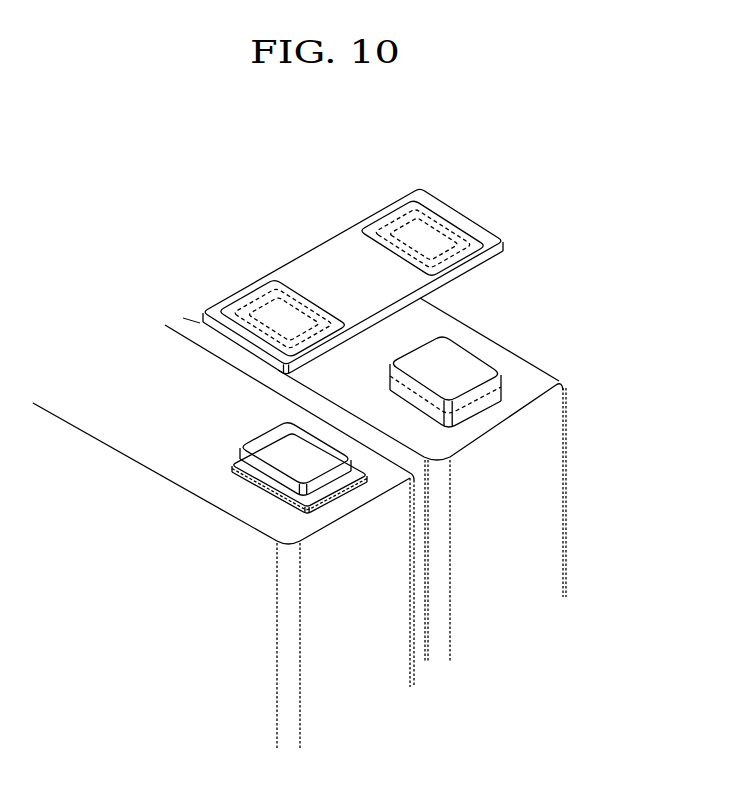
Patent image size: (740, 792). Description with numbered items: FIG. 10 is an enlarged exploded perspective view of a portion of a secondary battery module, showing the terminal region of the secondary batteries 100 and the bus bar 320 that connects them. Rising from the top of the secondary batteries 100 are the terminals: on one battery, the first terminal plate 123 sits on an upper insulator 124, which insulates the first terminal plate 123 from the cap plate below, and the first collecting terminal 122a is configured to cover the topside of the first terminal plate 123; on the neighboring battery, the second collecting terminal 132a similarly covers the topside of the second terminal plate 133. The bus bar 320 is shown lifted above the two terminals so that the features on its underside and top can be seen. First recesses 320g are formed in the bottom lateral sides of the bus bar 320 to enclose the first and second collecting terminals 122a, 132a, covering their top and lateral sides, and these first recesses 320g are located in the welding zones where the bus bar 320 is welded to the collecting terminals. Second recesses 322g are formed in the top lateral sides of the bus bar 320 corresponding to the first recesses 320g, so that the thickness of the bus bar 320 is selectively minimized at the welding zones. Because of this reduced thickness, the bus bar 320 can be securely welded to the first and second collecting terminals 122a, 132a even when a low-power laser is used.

The secondary battery 100 is at (550, 492).
The first collecting terminal 122a is at (270, 460).
The first terminal plate 123 is at (270, 497).
The upper insulator 124 is at (337, 503).
The second collecting terminal 132a is at (483, 370).
The second terminal plate 133 is at (490, 402).
The bus bar 320 is at (317, 252).
The first recess 320g is at (438, 244).
The second recess 322g is at (447, 228).